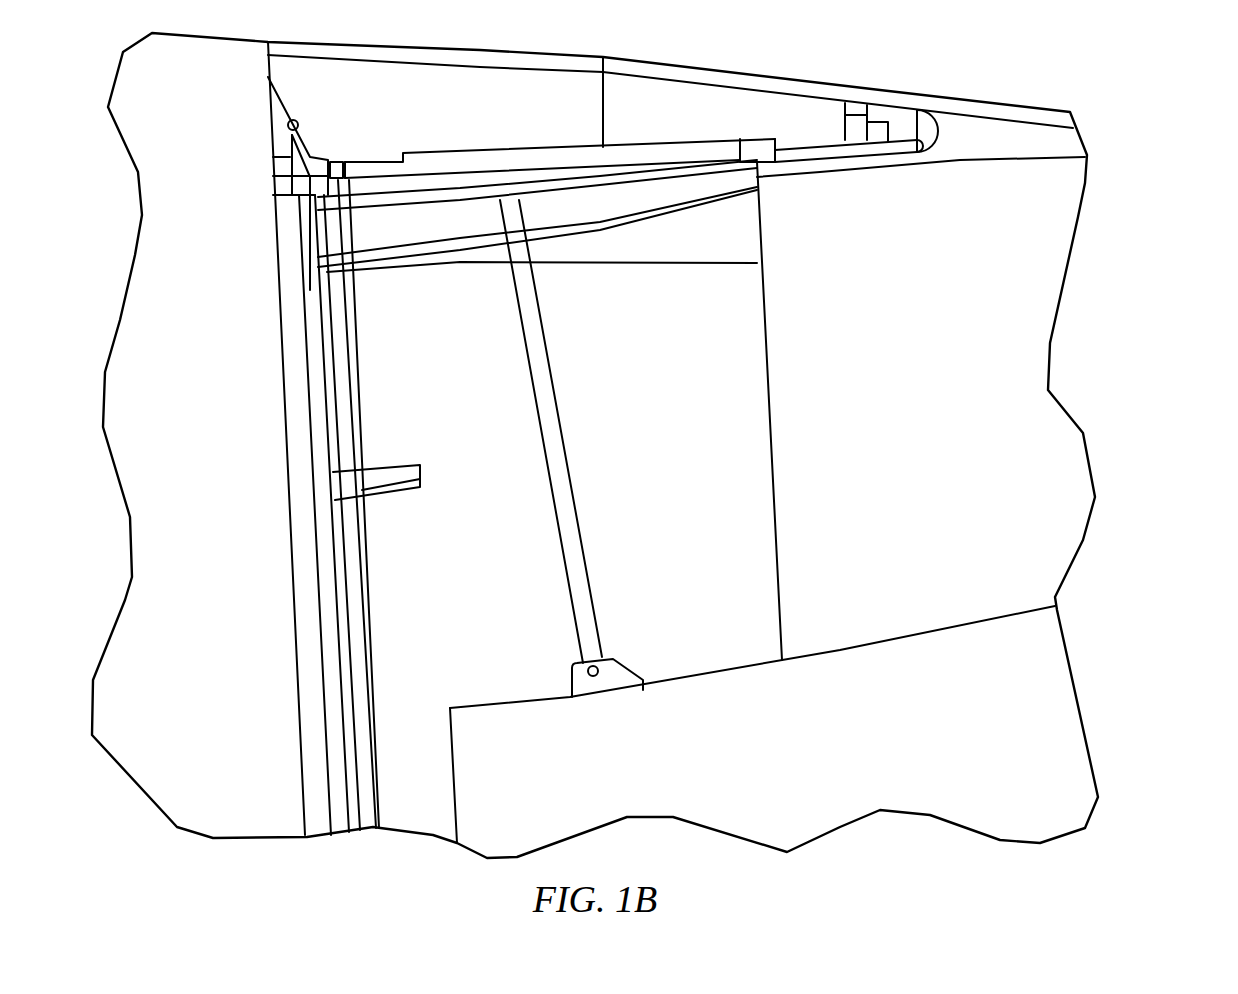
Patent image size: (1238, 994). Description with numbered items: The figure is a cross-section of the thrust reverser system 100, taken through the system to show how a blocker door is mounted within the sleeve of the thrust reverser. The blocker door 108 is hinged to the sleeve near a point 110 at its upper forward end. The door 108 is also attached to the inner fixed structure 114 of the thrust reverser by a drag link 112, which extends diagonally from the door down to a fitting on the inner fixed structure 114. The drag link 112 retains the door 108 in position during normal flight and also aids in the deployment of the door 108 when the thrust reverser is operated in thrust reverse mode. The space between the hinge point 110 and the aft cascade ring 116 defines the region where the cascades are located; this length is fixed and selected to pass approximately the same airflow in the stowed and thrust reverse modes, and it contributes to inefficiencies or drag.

The system 100 is at (1140, 133).
The blocker door 108 is at (580, 237).
The point 110 is at (320, 170).
The drag link 112 is at (520, 404).
The inner fixed structure 114 is at (1027, 732).
The aft cascade ring 116 is at (857, 137).